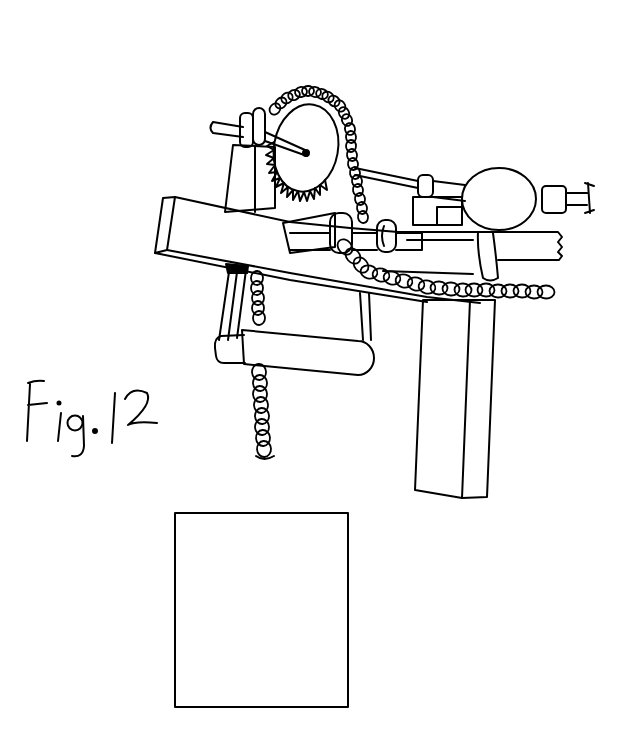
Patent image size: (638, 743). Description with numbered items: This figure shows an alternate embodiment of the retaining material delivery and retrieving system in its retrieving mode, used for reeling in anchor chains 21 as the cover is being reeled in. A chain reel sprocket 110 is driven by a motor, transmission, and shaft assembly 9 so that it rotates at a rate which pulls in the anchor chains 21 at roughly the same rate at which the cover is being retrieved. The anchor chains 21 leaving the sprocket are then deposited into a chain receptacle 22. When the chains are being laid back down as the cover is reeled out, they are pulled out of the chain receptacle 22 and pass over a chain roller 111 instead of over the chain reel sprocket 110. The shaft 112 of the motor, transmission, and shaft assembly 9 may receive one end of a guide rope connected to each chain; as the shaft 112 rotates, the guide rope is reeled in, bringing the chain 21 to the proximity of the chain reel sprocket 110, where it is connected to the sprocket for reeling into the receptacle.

The motor, transmission, and shaft assembly 9 is at (475, 166).
The anchor chain 21 is at (357, 147).
The chain receptacle 22 is at (451, 621).
The chain reel sprocket 110 is at (311, 127).
The chain roller 111 is at (327, 362).
The shaft 112 is at (222, 118).